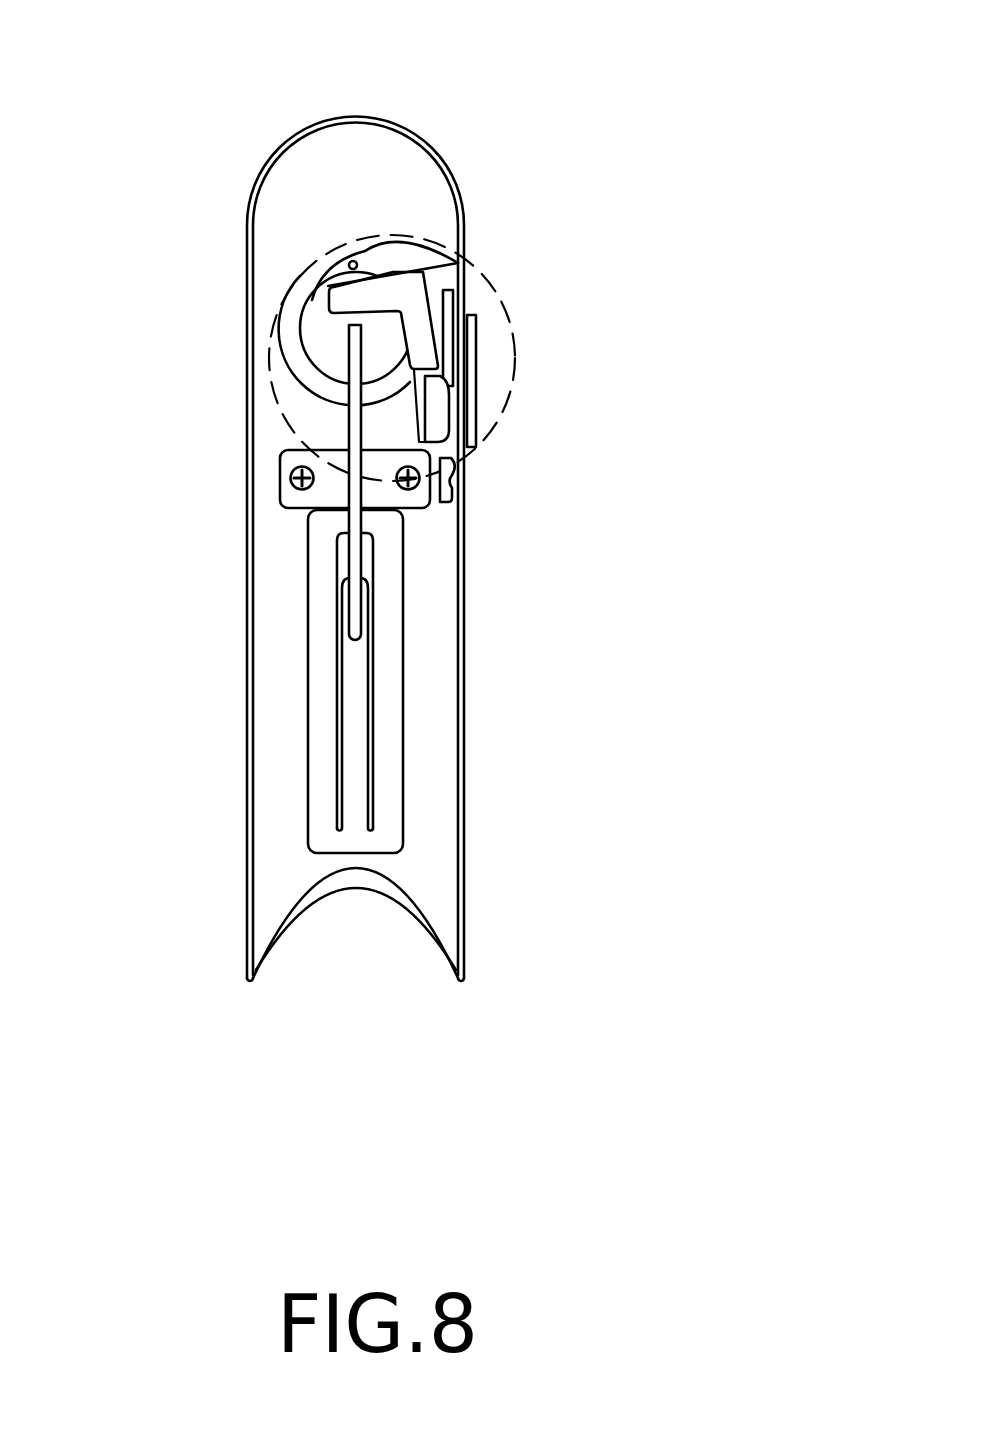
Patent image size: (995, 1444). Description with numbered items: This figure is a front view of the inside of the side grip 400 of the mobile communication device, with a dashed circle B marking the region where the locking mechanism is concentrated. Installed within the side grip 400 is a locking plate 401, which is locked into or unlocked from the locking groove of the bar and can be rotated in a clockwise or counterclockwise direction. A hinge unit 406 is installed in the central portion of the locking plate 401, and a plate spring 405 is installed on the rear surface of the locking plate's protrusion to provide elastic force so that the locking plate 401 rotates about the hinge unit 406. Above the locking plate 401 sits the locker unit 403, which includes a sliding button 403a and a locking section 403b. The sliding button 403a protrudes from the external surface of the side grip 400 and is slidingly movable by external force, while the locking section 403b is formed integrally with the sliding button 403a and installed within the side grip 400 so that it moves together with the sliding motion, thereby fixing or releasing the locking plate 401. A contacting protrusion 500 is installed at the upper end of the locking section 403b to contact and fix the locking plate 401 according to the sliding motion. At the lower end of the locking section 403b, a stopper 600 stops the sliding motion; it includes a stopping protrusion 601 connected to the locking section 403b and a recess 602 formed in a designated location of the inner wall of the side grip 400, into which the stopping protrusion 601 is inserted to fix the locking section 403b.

The side grip 400 is at (232, 267).
The locking plate 401 is at (322, 524).
The locker unit 403 is at (500, 313).
The sliding button 403a is at (470, 333).
The locking section 403b is at (422, 287).
The plate spring 405 is at (317, 656).
The hinge unit 406 is at (284, 477).
The contacting protrusion 500 is at (378, 292).
The stopper 600 is at (579, 439).
The stopping protrusion 601 is at (446, 422).
The recess 602 is at (444, 477).
The detail region B is at (415, 238).